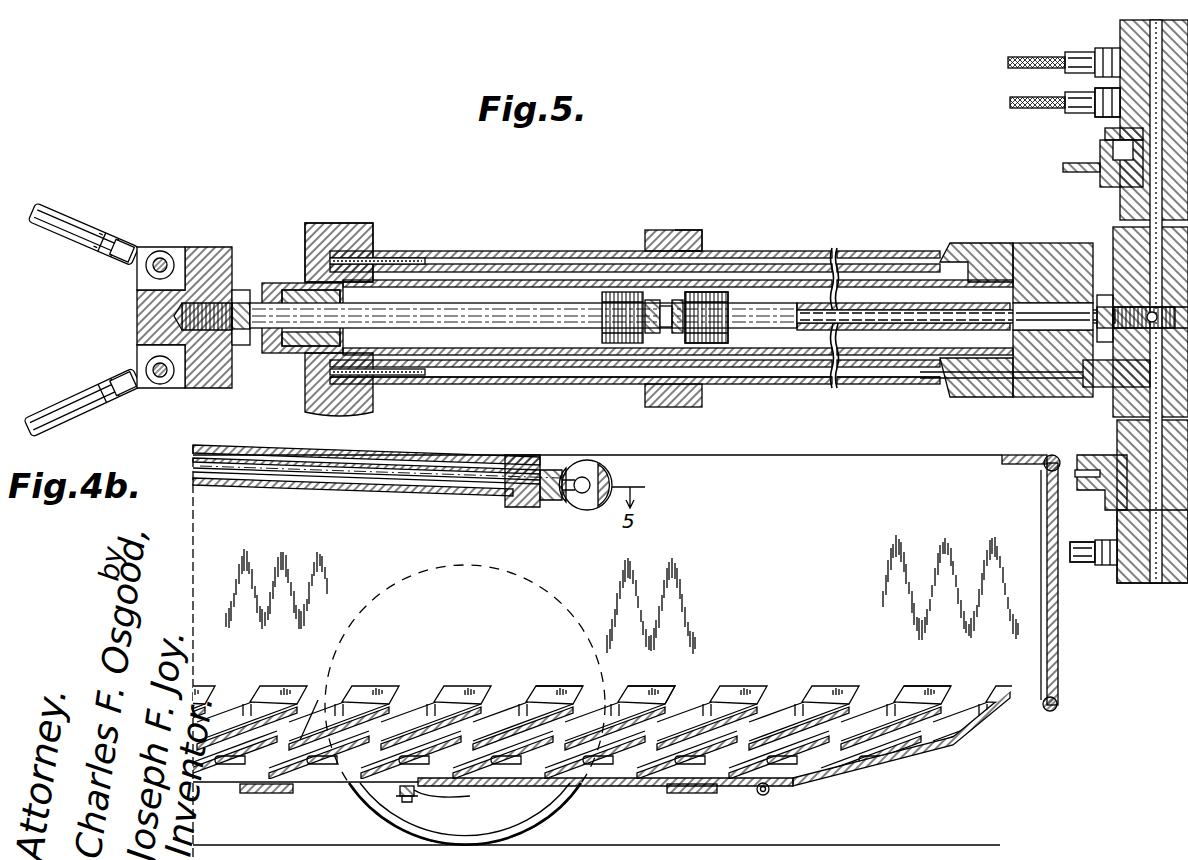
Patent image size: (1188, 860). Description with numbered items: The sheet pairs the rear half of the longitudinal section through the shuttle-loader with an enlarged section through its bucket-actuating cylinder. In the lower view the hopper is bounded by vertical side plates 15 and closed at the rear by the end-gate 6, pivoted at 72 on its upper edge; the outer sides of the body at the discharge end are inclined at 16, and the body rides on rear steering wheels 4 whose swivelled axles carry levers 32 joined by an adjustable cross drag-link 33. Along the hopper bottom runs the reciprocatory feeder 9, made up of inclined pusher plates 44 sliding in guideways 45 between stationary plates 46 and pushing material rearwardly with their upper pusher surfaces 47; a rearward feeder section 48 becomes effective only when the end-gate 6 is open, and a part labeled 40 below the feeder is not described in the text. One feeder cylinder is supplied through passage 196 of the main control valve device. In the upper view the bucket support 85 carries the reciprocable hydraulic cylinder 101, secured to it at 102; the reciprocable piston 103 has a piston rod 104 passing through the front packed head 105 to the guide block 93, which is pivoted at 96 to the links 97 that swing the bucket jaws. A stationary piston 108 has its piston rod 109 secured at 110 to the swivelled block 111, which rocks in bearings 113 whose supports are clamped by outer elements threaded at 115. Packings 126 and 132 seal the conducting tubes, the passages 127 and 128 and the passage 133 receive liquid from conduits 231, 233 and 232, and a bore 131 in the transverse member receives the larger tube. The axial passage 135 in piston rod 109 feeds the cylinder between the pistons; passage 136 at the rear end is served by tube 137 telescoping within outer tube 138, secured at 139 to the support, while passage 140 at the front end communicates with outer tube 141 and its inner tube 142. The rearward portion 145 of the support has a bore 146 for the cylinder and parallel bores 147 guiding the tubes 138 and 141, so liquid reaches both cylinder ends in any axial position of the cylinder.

In FIG. 4b, the rear steering wheels 4 is at (556, 800).
In FIG. 4b, the rear end-gate 6 is at (1058, 648).
In FIG. 4b, the reciprocatory conveyor or feeder 9 is at (640, 700).
In FIG. 4b, the vertical side plates 15 is at (780, 456).
In FIG. 4b, the inclined outer sides 16 is at (945, 730).
In FIG. 4b, the levers 32 is at (470, 798).
In FIG. 4b, the adjustable cross drag-link 33 is at (420, 800).
In FIG. 4b, the support block 40 is at (270, 792).
In FIG. 4b, the pusher plates 44 is at (722, 698).
In FIG. 4b, the inclined guideways 45 is at (330, 750).
In FIG. 4b, the stationary plates 46 is at (430, 700).
In FIG. 4b, the upper pusher surfaces 47 is at (250, 702).
In FIG. 4b, the rearward feeder section 48 is at (890, 700).
In FIG. 4b, the end-gate pivot 72 is at (1050, 455).
In FIG. 5, the bucket support 85 is at (306, 245).
In FIG. 5, the guide block 93 is at (200, 250).
In FIG. 5, the pivotal connection 96 is at (162, 256).
In FIG. 5, the arms or links 97 is at (100, 228).
In FIG. 5, the reciprocable hydraulic cylinder 101 is at (455, 262).
In FIG. 4b, the reciprocable hydraulic cylinder 101 is at (380, 458).
In FIG. 5, the cylinder securing point 102 is at (390, 262).
In FIG. 5, the reciprocable piston 103 is at (620, 290).
In FIG. 5, the piston rod 104 is at (500, 300).
In FIG. 5, the front packed head 105 is at (292, 290).
In FIG. 5, the stationary piston 108 is at (706, 300).
In FIG. 5, the piston rod 109 is at (860, 304).
In FIG. 4b, the piston rod 109 is at (442, 470).
In FIG. 4b, the rod securing point 110 is at (580, 478).
In FIG. 4b, the swivelled block 111 is at (594, 466).
In FIG. 5, the bearings 113 is at (1100, 160).
In FIG. 5, the threaded securing 115 is at (1105, 134).
In FIG. 4b, the packings 126 is at (1125, 528).
In FIG. 5, the liquid flow passage 127 is at (1118, 56).
In FIG. 4b, the liquid flow passage 128 is at (1140, 560).
In FIG. 5, the bore 131 is at (1120, 203).
In FIG. 5, the packing 132 is at (1100, 116).
In FIG. 5, the passage 133 is at (1110, 92).
In FIG. 5, the axial passage 135 is at (940, 316).
In FIG. 5, the liquid flow passage 136 is at (1000, 262).
In FIG. 5, the longitudinally extending tube 137 is at (1070, 300).
In FIG. 5, the outer tube 138 is at (562, 250).
In FIG. 5, the tube securing point 139 is at (345, 252).
In FIG. 5, the liquid flow passage 140 is at (318, 366).
In FIG. 5, the outer tube 141 is at (552, 386).
In FIG. 5, the inner tube 142 is at (790, 384).
In FIG. 5, the rearward portion 145 is at (700, 232).
In FIG. 5, the bore 146 is at (700, 280).
In FIG. 5, the parallel bores 147 is at (665, 240).
In FIG. 5, the passage 196 is at (215, 300).
In FIG. 5, the conduit 231 is at (1008, 62).
In FIG. 5, the conduit 232 is at (1010, 102).
In FIG. 4b, the conduit 233 is at (1082, 566).